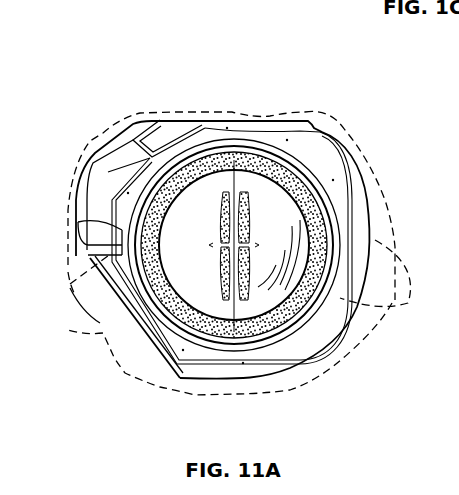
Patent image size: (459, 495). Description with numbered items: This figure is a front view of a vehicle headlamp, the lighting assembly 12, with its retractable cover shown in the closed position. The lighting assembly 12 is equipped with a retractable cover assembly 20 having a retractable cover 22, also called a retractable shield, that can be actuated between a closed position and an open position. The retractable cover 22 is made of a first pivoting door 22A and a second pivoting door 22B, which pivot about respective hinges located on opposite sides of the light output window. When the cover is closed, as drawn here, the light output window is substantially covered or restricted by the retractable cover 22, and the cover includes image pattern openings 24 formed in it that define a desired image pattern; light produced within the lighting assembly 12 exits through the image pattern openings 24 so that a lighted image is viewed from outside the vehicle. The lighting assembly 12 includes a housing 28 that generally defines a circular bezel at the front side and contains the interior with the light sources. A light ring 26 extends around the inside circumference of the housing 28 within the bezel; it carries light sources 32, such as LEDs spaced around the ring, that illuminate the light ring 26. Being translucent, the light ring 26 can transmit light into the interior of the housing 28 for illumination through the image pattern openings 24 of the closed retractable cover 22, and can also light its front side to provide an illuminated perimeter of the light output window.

The lighting assembly 12 is at (139, 62).
The retractable cover assembly 20 is at (129, 103).
The retractable cover 22 is at (228, 205).
The first pivoting door 22A is at (186, 285).
The second pivoting door 22B is at (285, 294).
The image pattern openings 24 is at (222, 214).
The light ring 26 is at (247, 214).
The housing 28 is at (82, 221).
The light sources 32 is at (168, 148).